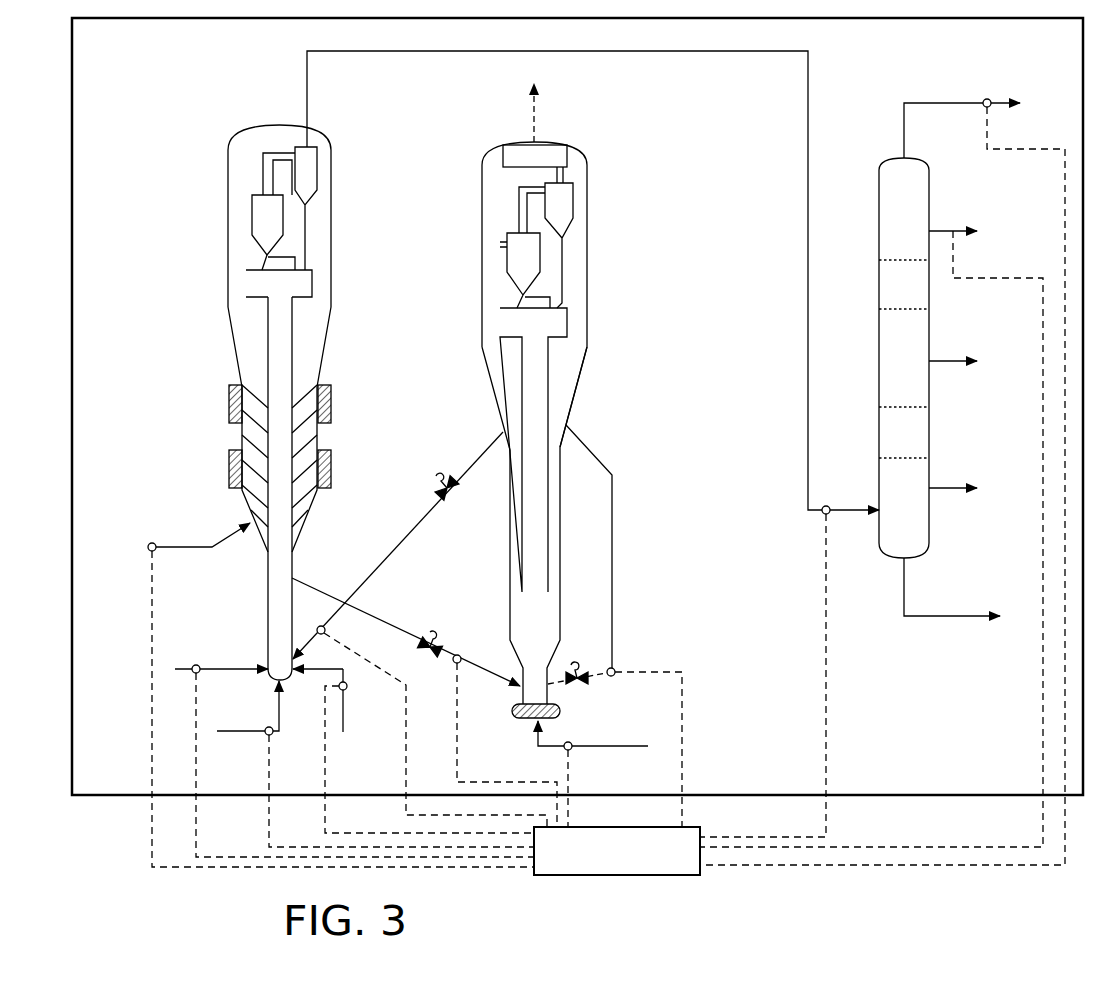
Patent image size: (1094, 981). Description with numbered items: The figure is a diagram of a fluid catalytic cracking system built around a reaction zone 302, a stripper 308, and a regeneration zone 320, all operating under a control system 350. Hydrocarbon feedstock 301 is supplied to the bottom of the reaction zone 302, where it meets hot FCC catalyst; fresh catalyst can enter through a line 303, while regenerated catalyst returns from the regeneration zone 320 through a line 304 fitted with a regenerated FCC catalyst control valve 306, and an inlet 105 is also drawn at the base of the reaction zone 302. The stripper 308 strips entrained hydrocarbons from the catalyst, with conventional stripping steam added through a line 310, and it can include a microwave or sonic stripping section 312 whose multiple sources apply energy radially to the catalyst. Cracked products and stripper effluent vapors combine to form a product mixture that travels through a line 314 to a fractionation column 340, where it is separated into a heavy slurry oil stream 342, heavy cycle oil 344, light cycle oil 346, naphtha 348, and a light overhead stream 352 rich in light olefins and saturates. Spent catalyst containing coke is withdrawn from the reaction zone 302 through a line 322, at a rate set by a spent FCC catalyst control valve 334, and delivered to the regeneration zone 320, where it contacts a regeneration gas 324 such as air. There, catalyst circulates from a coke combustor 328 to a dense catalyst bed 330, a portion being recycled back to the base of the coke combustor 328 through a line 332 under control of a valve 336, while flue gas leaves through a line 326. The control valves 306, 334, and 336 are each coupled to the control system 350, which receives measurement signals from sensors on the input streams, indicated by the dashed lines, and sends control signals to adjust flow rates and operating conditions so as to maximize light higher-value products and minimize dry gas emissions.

The reaction zone 302 is at (196, 207).
The line 314 is at (440, 49).
The line 326 is at (537, 130).
The regeneration zone 320 is at (605, 223).
The light overhead stream 352 is at (968, 103).
The fractionation column 340 is at (878, 225).
The naphtha 348 is at (953, 229).
The light cycle oil 346 is at (945, 360).
The heavy cycle oil 344 is at (945, 487).
The slurry oil stream 342 is at (990, 614).
The microwave or sonic stripping section 312 is at (226, 415).
The stripper 308 is at (320, 433).
The dense catalyst bed 330 is at (580, 383).
The line 332 is at (612, 543).
The regenerated FCC catalyst control valve 306 is at (455, 494).
The line 304 is at (397, 540).
The line 310 is at (236, 528).
The spent FCC catalyst control valve 334 is at (432, 638).
The line 322 is at (497, 673).
The valve 336 is at (578, 668).
The feed inlet line 105 is at (250, 667).
The hydrocarbon feedstock 301 is at (255, 728).
The line 303 is at (343, 722).
The coke combustor 328 is at (520, 700).
The regeneration gas 324 is at (603, 746).
The control system 350 is at (660, 876).